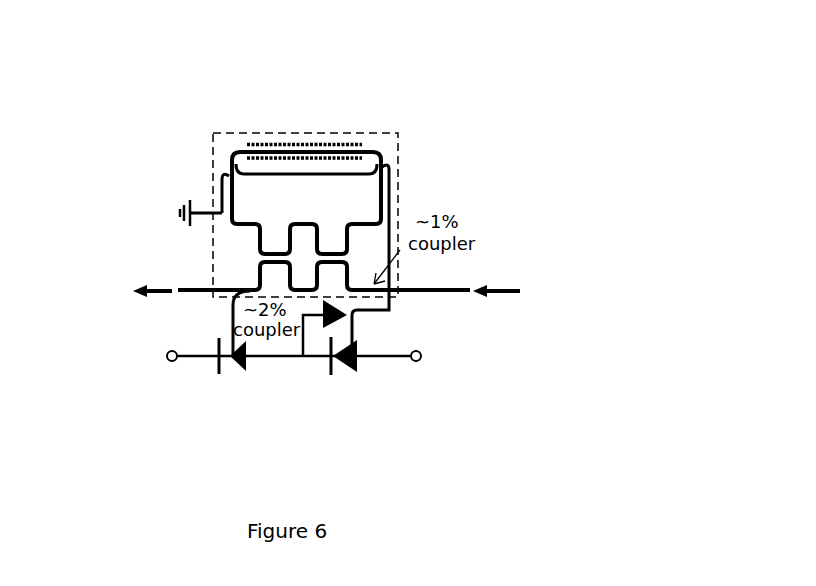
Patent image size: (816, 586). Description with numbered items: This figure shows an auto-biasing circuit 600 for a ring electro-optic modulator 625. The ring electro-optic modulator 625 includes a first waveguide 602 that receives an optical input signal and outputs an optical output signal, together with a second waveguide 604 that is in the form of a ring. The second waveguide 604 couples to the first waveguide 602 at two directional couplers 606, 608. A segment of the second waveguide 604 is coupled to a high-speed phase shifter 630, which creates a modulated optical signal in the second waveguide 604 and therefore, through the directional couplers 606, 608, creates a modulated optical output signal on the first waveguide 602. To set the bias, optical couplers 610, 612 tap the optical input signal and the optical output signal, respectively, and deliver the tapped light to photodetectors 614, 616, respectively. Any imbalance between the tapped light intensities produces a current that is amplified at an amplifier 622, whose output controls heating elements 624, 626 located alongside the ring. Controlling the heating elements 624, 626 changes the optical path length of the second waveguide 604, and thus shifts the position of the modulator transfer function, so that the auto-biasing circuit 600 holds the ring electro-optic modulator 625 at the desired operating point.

The auto-biasing circuit 600 is at (444, 63).
The first waveguide 602 is at (258, 288).
The second waveguide 604 is at (238, 150).
The directional coupler 606 is at (338, 249).
The directional coupler 608 is at (277, 249).
The optical coupler 610 is at (354, 330).
The optical coupler 612 is at (228, 331).
The photodetector 614 is at (362, 366).
The photodetector 616 is at (240, 374).
The amplifier 622 is at (345, 313).
The heating element 624 is at (395, 190).
The ring electro-optic modulator 625 is at (212, 150).
The heating element 626 is at (218, 192).
The high-speed phase shifter 630 is at (302, 148).